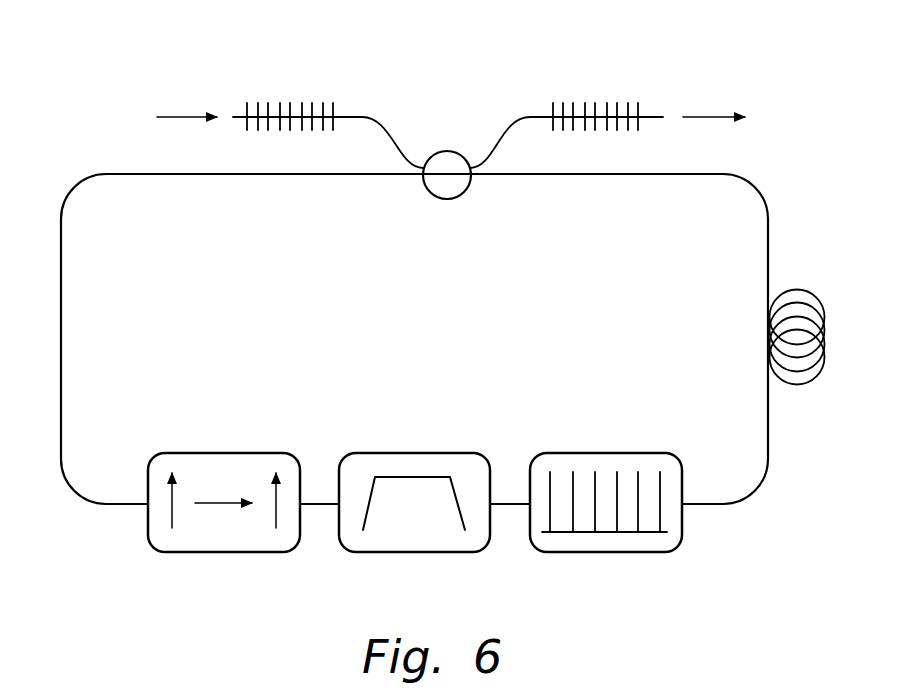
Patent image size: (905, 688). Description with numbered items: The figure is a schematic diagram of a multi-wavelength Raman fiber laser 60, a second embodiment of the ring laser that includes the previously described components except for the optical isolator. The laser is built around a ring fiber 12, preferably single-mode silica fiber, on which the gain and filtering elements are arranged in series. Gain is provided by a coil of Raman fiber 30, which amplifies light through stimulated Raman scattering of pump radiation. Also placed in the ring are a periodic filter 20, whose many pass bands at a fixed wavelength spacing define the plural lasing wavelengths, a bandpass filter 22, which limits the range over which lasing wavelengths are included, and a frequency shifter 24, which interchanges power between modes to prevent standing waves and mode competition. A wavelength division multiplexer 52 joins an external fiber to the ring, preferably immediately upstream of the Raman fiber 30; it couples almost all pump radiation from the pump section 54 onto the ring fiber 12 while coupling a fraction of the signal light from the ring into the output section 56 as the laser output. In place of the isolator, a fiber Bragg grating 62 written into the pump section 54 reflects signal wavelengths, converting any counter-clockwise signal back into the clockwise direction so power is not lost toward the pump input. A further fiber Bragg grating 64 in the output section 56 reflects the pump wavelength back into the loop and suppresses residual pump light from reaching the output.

The multi-wavelength Raman fiber laser 60 is at (98, 43).
The ring fiber 12 is at (762, 198).
The periodic filter 20 is at (607, 552).
The bandpass filter 22 is at (408, 552).
The frequency shifter 24 is at (220, 552).
The Raman fiber 30 is at (823, 310).
The wavelength division multiplexer 52 is at (447, 150).
The pump section 54 is at (347, 117).
The output section 56 is at (544, 117).
The fiber Bragg grating 62 is at (270, 112).
The fiber Bragg grating 64 is at (578, 112).